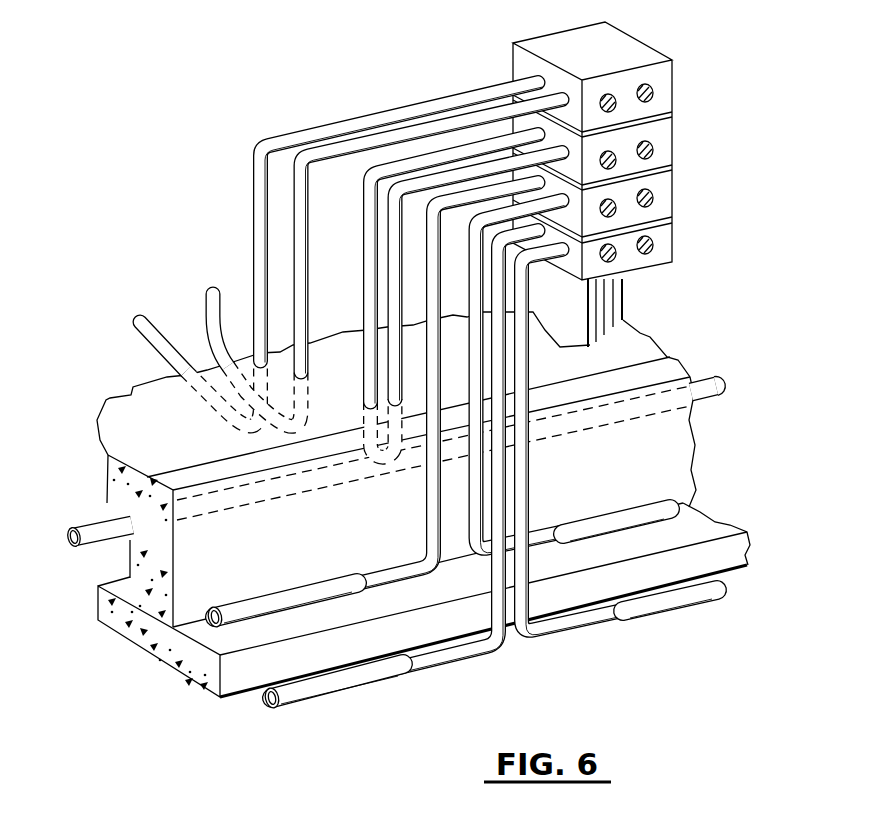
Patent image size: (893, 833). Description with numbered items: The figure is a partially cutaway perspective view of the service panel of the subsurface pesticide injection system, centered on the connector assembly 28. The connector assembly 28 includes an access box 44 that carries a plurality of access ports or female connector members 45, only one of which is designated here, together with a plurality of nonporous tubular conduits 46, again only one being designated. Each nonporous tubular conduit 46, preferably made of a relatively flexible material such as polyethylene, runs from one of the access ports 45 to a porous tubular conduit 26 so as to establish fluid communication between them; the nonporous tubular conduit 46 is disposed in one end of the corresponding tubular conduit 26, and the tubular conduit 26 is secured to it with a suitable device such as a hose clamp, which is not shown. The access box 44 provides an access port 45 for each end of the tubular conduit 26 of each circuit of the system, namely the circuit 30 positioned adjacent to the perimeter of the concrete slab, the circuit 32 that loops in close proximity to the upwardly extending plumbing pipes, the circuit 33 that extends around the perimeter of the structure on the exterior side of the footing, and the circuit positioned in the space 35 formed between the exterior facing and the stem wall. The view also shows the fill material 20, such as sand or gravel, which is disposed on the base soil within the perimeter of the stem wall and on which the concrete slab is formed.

The fill material 20 is at (118, 415).
The porous conduit 26 is at (90, 526).
The connector assembly 28 is at (700, 135).
The circuit 30 is at (87, 550).
The circuit 32 is at (203, 293).
The circuit 33 is at (462, 665).
The space 35 is at (337, 600).
The access box 44 is at (673, 200).
The access port 45 is at (648, 256).
The nonporous tubular conduit 46 is at (300, 128).